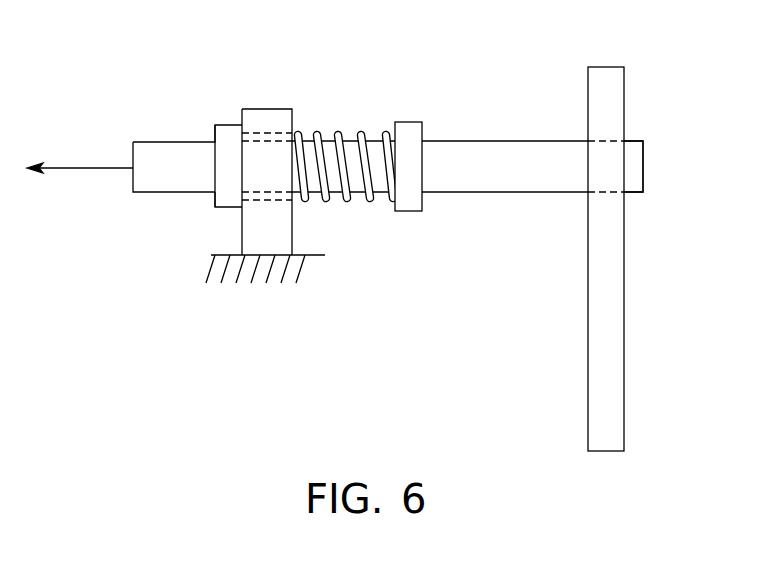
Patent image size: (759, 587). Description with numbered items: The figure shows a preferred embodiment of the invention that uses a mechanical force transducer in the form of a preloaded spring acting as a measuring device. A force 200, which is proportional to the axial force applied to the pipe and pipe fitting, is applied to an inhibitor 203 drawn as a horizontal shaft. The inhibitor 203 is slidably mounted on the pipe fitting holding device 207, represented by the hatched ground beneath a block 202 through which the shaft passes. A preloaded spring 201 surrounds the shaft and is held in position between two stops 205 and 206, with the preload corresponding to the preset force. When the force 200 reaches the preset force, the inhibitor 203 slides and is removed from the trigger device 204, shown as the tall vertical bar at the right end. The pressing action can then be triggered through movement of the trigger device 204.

The force 200 is at (80, 152).
The preloaded spring 201 is at (313, 133).
The support block / bearing 202 is at (268, 109).
The inhibitor 203 is at (645, 163).
The trigger device 204 is at (626, 363).
The stop 205 is at (228, 208).
The stop 206 is at (403, 212).
The pipe fitting holding device 207 is at (302, 290).